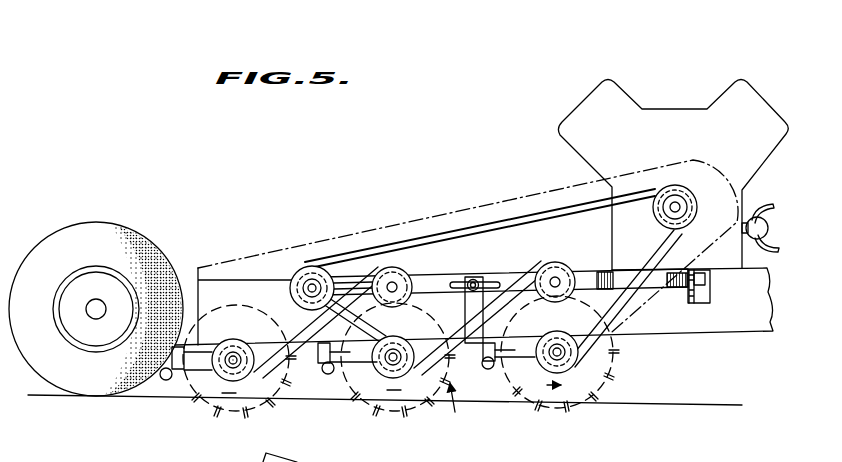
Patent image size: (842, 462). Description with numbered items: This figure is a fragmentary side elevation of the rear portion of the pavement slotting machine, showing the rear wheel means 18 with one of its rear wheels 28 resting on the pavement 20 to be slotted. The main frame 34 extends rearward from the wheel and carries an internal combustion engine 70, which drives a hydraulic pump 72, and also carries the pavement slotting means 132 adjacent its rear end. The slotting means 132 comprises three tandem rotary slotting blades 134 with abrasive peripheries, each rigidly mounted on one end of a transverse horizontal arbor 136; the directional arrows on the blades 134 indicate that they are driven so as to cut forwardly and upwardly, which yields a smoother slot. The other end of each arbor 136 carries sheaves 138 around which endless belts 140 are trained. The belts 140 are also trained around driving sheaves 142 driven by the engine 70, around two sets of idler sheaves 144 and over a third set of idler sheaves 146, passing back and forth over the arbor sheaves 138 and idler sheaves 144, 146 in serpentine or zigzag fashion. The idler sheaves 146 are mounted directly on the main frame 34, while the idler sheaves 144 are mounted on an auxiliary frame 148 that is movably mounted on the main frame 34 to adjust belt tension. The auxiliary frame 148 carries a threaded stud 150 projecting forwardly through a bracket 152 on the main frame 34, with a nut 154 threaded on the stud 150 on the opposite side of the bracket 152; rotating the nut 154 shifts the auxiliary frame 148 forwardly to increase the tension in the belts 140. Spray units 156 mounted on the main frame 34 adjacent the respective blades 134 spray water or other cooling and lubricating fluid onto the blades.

The rear wheel means 18 is at (135, 226).
The pavement 20 is at (679, 403).
The rear wheel 28 is at (67, 229).
The main frame 34 is at (735, 333).
The internal combustion engine 70 is at (656, 115).
The hydraulic pump 72 is at (769, 229).
The pavement slotting means 132 is at (463, 404).
The rotary slotting blade 134 is at (193, 393).
The arbor 136 is at (233, 362).
The sheave 138 is at (252, 383).
The endless belt 140 is at (420, 238).
The driving sheave 142 is at (690, 190).
The idler sheave 144 is at (386, 268).
The idler sheave 146 is at (305, 267).
The auxiliary frame 148 is at (447, 280).
The threaded stud 150 is at (690, 282).
The bracket 152 is at (690, 300).
The nut 154 is at (700, 293).
The spray unit 156 is at (166, 380).